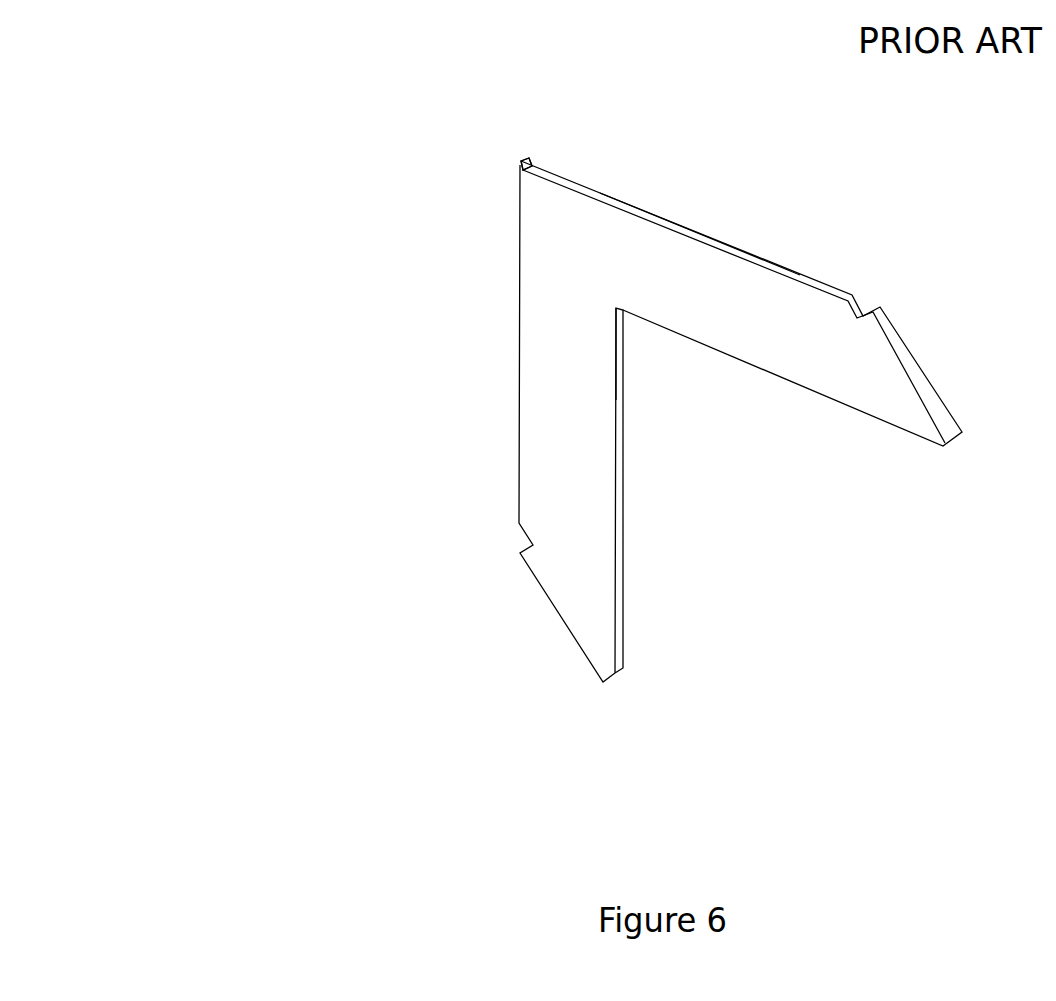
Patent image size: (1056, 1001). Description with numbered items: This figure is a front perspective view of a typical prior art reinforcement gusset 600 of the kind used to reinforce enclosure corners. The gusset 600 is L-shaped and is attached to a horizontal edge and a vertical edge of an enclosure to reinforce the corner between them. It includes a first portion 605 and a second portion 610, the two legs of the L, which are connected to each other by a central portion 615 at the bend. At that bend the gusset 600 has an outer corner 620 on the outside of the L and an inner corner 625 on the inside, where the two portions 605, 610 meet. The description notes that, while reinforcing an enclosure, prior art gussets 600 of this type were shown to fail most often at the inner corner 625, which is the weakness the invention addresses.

The reinforcement gusset 600 is at (287, 145).
The first portion 605 is at (710, 290).
The second portion 610 is at (585, 547).
The central portion 615 is at (582, 255).
The outer corner 620 is at (525, 166).
The inner corner 625 is at (617, 308).